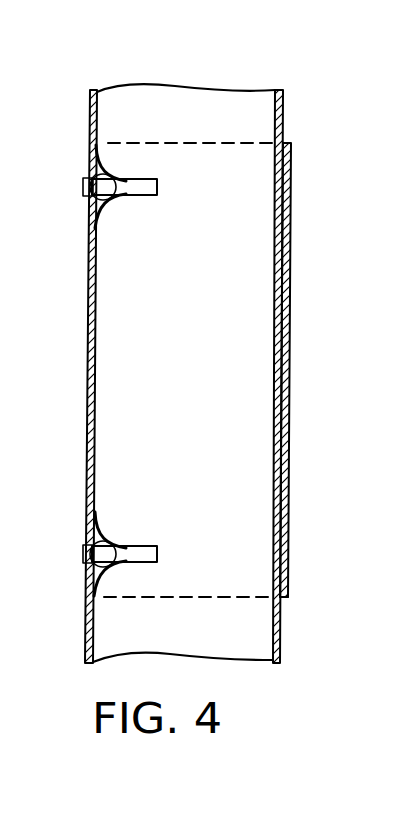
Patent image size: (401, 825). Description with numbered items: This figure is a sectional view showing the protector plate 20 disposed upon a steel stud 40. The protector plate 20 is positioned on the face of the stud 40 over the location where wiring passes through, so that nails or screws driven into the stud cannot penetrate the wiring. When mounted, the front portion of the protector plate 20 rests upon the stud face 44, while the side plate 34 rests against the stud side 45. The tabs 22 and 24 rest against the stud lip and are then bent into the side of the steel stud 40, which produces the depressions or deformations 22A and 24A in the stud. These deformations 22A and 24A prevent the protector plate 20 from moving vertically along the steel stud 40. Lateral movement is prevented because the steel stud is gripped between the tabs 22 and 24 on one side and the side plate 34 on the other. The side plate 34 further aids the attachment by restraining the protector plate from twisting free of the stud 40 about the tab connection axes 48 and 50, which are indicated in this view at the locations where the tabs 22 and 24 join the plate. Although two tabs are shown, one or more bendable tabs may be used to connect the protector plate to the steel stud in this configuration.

The protector plate 20 is at (206, 374).
The tab 22 is at (158, 187).
The depression 22A is at (108, 150).
The tab 24 is at (158, 557).
The depression 24A is at (107, 518).
The side plate 34 is at (291, 384).
The steel stud 40 is at (302, 652).
The stud face 44 is at (140, 102).
The stud side 45 is at (290, 619).
The tab connection axis 48 is at (82, 182).
The tab connection axis 50 is at (82, 550).